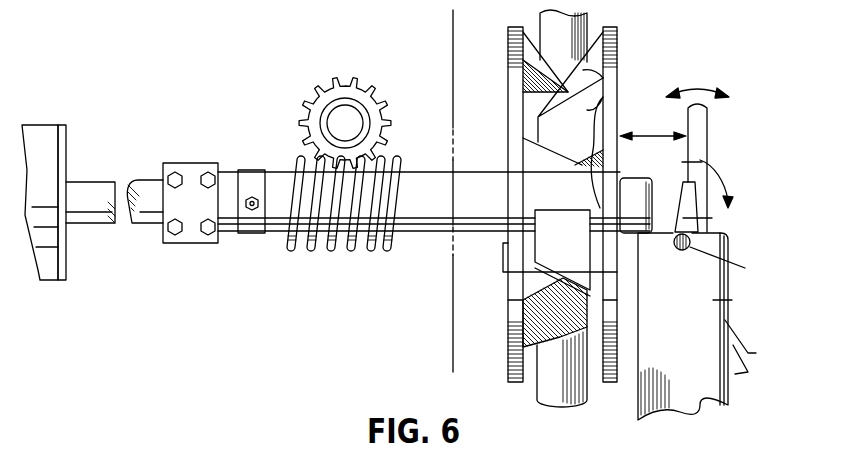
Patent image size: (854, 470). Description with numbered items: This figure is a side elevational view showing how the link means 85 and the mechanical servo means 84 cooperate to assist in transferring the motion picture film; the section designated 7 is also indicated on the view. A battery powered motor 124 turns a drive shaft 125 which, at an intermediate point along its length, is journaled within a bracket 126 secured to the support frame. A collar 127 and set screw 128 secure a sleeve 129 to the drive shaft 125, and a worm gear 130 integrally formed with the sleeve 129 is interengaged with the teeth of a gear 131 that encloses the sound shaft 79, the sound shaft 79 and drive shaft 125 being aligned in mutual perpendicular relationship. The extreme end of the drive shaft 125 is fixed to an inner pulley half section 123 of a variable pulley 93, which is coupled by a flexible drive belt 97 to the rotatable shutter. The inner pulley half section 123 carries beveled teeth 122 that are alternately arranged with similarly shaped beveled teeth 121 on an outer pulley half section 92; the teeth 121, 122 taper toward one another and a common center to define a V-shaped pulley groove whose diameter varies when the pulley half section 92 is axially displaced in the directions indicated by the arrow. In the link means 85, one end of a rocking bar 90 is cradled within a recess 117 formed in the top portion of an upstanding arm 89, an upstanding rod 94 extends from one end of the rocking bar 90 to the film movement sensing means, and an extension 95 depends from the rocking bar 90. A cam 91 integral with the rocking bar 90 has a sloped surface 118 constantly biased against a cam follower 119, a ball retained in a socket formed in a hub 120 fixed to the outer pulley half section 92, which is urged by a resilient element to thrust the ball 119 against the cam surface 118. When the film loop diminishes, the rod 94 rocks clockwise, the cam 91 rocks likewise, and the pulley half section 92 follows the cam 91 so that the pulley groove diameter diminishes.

The section line 7- 7 is at (463, 23).
The sound shaft 79 is at (342, 117).
The mechanical servo means 84 is at (670, 73).
The link means 85 is at (715, 147).
The upstanding arm 89 is at (732, 300).
The rocking bar 90 is at (712, 247).
The cam 91 is at (715, 218).
The pulley half section 92 is at (612, 80).
The variable pulley 93 is at (632, 42).
The upstanding rod 94 is at (707, 124).
The extension 95 is at (741, 340).
The flexible drive belt 97 is at (552, 24).
The recess 117 is at (745, 268).
The sloped surface 118 is at (678, 200).
The cam follower 119 is at (668, 218).
The hub 120 is at (635, 238).
The beveled teeth 121 is at (583, 100).
The beveled teeth 122 is at (525, 297).
The inner pulley half section 123 is at (510, 118).
The battery powered motor 124 is at (50, 142).
The drive shaft 125 is at (88, 190).
The bracket 126 is at (188, 230).
The collar 127 is at (250, 177).
The set screw 128 is at (252, 212).
The sleeve 129 is at (278, 183).
The worm gear 130 is at (347, 243).
The gear 131 is at (390, 108).